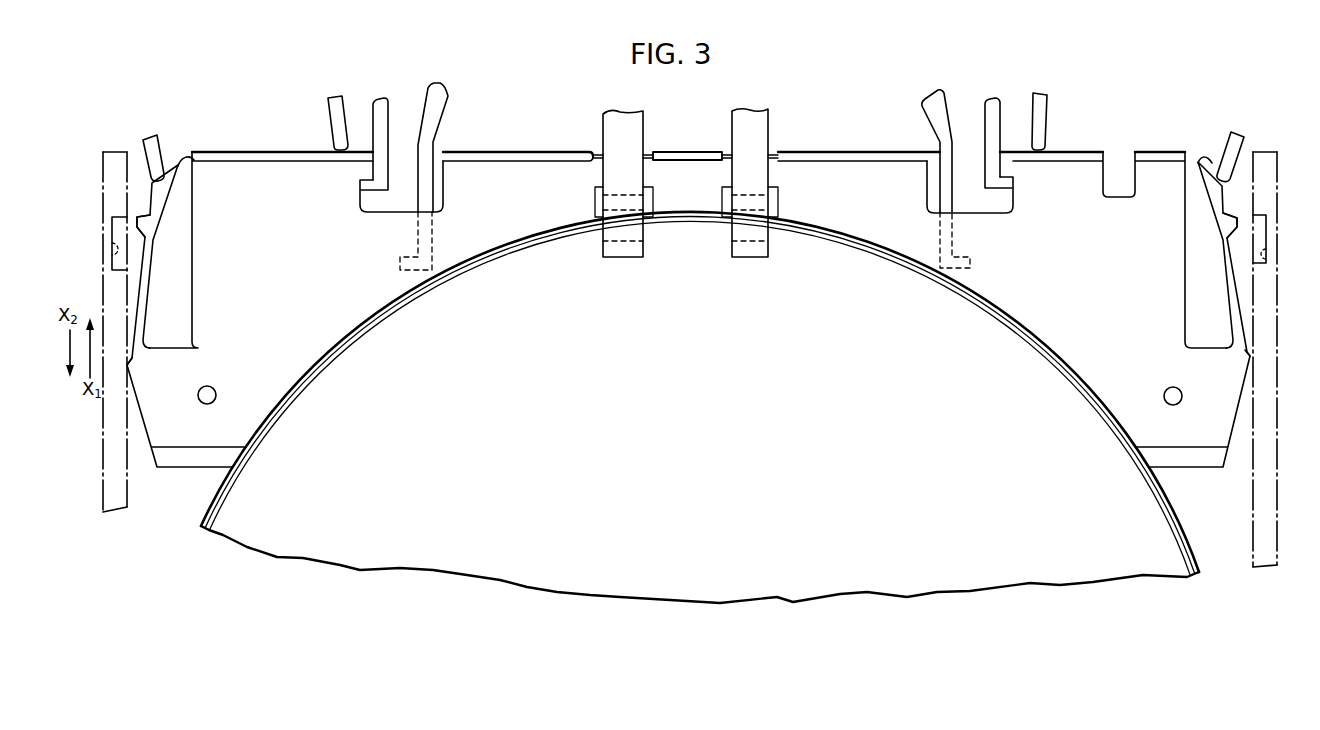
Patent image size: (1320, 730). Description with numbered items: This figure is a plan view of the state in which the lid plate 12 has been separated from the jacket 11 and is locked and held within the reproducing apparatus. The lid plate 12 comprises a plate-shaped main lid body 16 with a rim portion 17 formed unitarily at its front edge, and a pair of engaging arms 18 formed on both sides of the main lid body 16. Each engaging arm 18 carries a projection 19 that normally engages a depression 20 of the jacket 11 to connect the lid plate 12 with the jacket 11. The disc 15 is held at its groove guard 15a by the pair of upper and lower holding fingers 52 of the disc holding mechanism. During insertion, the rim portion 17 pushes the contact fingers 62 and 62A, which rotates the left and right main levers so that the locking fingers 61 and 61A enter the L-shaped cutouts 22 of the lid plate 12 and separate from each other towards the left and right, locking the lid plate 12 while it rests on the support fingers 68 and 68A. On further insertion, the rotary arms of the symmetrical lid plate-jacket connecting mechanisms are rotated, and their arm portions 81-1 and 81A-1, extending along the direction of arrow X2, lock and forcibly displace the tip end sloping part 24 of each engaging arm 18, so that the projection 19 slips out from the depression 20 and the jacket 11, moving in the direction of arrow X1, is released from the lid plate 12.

The jacket 11 is at (110, 433).
The lid plate 12 is at (809, 146).
The disc 15 is at (935, 588).
The groove guard 15a is at (1176, 519).
The main lid body 16 is at (372, 305).
The rim portion 17 is at (542, 150).
The engaging arm 18 is at (150, 261).
The projection 19 is at (137, 222).
The depression 20 is at (112, 257).
The L-shaped cutout 22 is at (388, 204).
The tip end sloping part 24 is at (194, 160).
The holding finger 52 is at (756, 254).
The locking finger 61 is at (390, 117).
The locking finger 61A is at (1000, 117).
The contact finger 62 is at (325, 115).
The contact finger 62A is at (1050, 120).
The support finger 68 is at (433, 133).
The support finger 68A is at (938, 135).
The arm portion 81-1 is at (159, 152).
The arm portion 81A-1 is at (1252, 126).